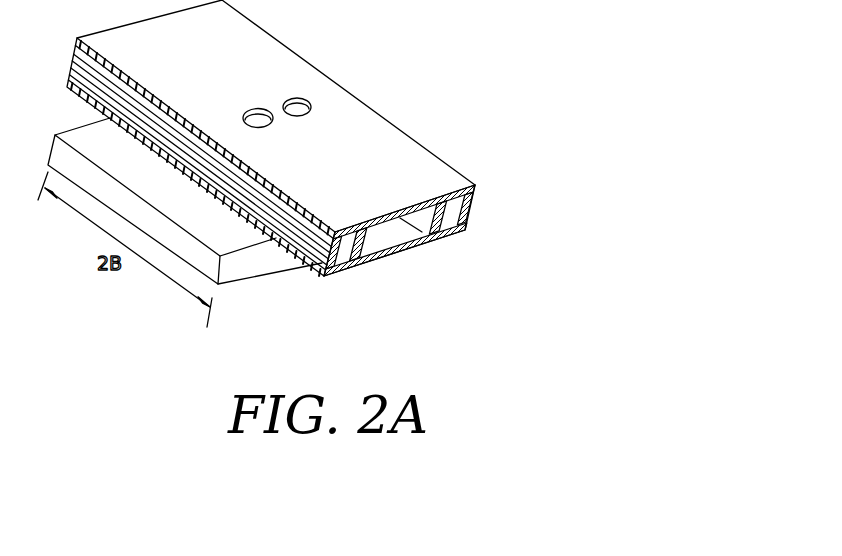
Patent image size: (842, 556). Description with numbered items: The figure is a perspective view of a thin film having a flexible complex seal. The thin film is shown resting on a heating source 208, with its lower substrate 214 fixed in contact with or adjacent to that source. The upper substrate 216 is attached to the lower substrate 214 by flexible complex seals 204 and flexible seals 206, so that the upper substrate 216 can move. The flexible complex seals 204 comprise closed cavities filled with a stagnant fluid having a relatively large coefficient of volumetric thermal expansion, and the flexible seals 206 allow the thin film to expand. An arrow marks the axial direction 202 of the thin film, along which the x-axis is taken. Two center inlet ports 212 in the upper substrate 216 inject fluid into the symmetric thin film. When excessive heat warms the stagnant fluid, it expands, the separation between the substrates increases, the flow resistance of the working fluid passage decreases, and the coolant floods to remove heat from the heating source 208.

The axial direction 202 is at (398, 232).
The flexible complex seal 204 is at (446, 230).
The flexible seal 206 is at (472, 203).
The heating source 208 is at (230, 272).
The inlet port 212 is at (260, 112).
The lower substrate 214 is at (395, 256).
The upper substrate 216 is at (430, 163).